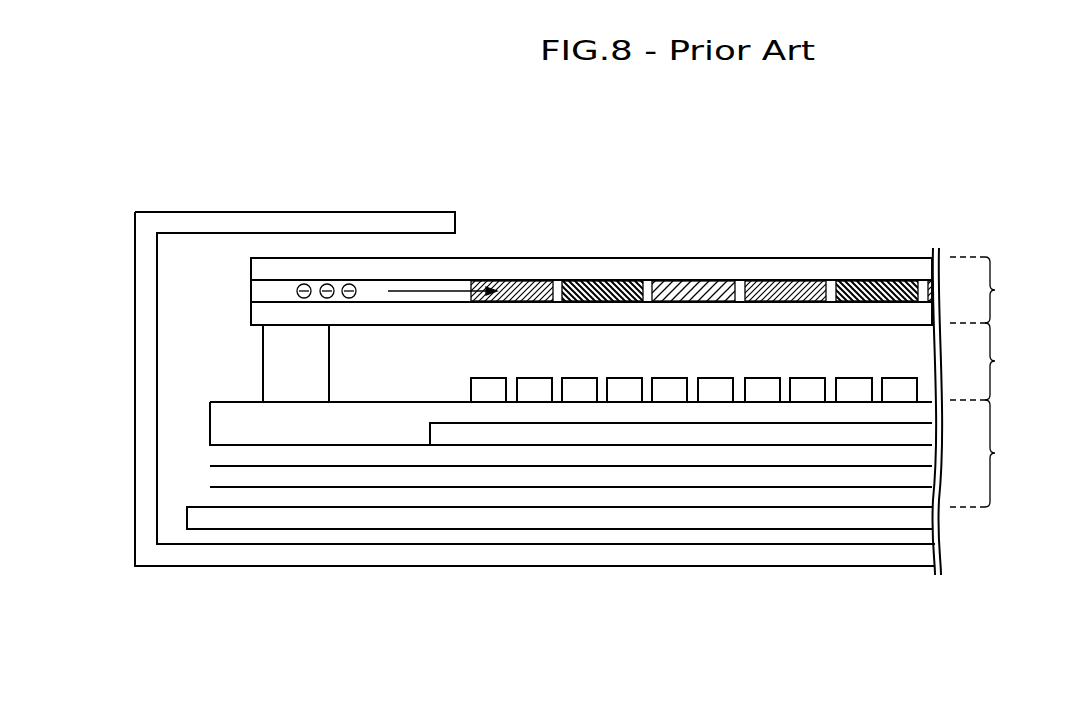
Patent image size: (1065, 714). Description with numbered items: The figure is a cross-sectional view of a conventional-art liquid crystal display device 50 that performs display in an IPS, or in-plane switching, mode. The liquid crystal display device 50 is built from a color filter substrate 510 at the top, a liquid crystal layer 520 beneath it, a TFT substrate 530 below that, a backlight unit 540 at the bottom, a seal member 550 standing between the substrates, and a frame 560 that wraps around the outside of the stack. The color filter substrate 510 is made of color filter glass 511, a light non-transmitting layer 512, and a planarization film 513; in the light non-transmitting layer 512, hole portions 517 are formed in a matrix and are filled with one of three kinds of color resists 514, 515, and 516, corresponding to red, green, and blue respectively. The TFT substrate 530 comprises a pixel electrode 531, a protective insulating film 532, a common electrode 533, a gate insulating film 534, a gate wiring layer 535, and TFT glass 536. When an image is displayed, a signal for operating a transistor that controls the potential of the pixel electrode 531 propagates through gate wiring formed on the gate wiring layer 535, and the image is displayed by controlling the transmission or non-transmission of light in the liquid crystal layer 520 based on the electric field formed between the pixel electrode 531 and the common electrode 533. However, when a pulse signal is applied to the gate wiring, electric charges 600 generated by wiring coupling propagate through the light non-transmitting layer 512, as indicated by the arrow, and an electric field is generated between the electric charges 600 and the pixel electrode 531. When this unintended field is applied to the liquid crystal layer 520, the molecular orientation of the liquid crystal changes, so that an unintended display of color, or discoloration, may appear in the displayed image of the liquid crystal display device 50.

The liquid crystal display device 50 is at (803, 586).
The color filter substrate 510 is at (997, 290).
The color filter glass 511 is at (251, 269).
The light non-transmitting layer 512 is at (251, 300).
The planarization film 513 is at (251, 319).
The color resist 514 is at (508, 280).
The color resist 515 is at (601, 280).
The color resist 516 is at (685, 280).
The hole portions 517 is at (471, 296).
The liquid crystal layer 520 is at (997, 361).
The TFT substrate 530 is at (997, 453).
The pixel electrode 531 is at (490, 378).
The protective insulating film 532 is at (210, 420).
The common electrode 533 is at (455, 423).
The gate insulating film 534 is at (210, 458).
The gate wiring layer 535 is at (210, 485).
The TFT glass 536 is at (210, 497).
The backlight unit 540 is at (237, 530).
The seal member 550 is at (263, 357).
The frame 560 is at (172, 212).
The electric charges 600 is at (349, 283).